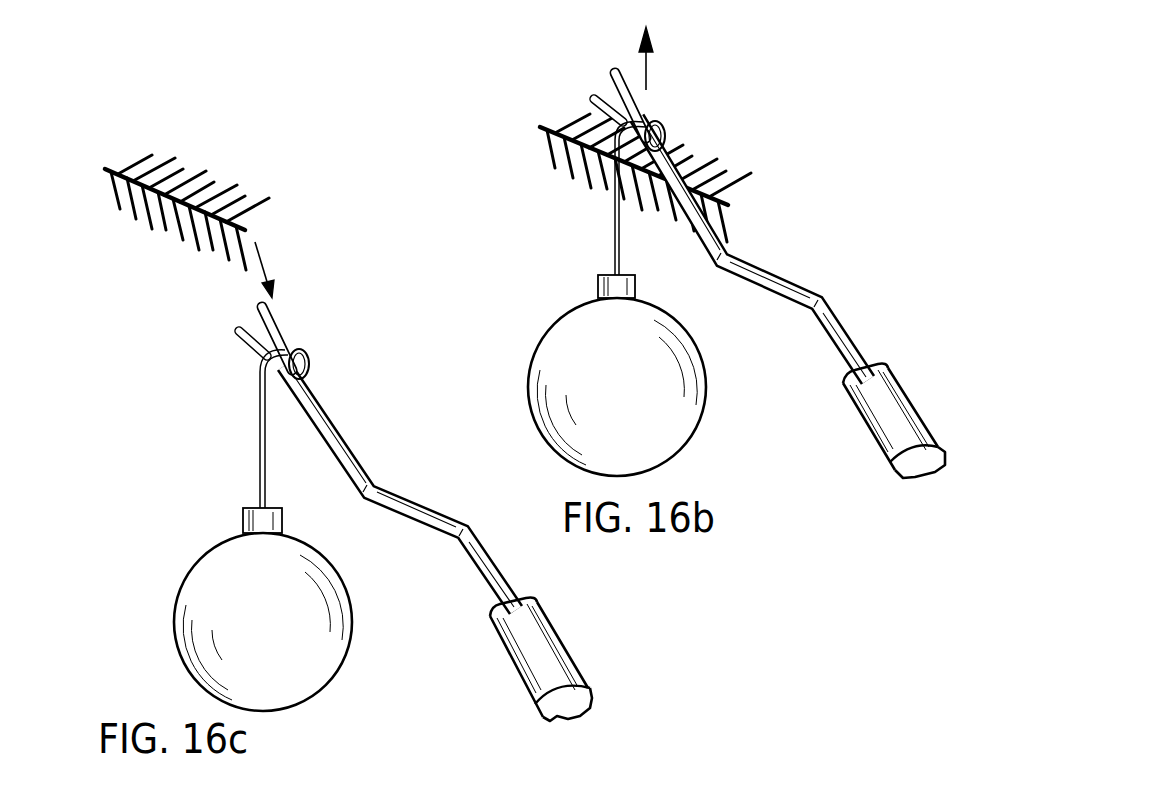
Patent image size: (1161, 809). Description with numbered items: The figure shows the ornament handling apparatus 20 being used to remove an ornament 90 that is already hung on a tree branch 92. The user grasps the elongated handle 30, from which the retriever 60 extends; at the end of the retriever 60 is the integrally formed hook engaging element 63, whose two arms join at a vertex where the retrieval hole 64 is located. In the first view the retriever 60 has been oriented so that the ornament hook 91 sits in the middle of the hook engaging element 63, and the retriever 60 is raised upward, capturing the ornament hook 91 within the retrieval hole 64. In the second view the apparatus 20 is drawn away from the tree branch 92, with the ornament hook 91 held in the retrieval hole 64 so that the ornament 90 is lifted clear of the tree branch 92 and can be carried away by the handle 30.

In FIG. 16c, the ornament handling apparatus 20 is at (412, 422).
In FIG. 16b, the ornament handling apparatus 20 is at (872, 274).
In FIG. 16c, the elongated handle 30 is at (527, 653).
In FIG. 16b, the elongated handle 30 is at (883, 413).
In FIG. 16c, the retriever 60 is at (410, 513).
In FIG. 16b, the retriever 60 is at (768, 280).
In FIG. 16c, the hook engaging element 63 is at (305, 358).
In FIG. 16b, the hook engaging element 63 is at (662, 130).
In FIG. 16c, the retrieval hole 64 is at (275, 335).
In FIG. 16b, the retrieval hole 64 is at (640, 115).
In FIG. 16c, the ornament 90 is at (225, 555).
In FIG. 16b, the ornament 90 is at (555, 350).
In FIG. 16c, the ornament hook 91 is at (260, 435).
In FIG. 16b, the ornament hook 91 is at (618, 222).
In FIG. 16c, the tree branch 92 is at (157, 192).
In FIG. 16b, the tree branch 92 is at (577, 170).